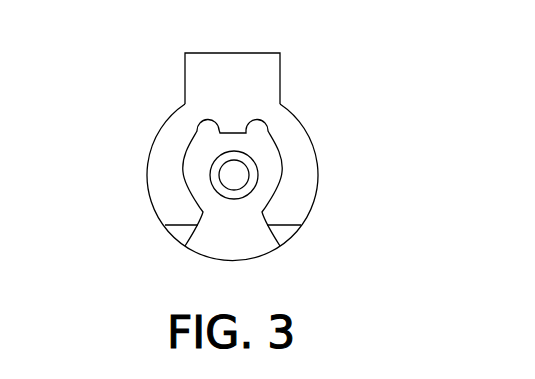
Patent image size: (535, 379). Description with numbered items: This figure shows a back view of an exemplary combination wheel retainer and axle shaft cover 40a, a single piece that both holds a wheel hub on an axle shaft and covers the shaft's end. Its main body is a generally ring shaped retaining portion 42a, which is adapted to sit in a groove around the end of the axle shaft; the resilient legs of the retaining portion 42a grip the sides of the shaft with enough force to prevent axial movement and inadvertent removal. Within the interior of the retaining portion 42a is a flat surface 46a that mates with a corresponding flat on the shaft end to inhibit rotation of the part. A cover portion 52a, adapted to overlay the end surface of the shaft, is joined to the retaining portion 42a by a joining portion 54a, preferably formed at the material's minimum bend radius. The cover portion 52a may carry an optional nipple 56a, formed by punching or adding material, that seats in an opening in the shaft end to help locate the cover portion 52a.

The combination wheel retainer and axle shaft cover 40a is at (327, 113).
The retaining portion 42a is at (293, 202).
The flat surface 46a is at (230, 149).
The cover portion 52a is at (235, 240).
The joining portion 54a is at (210, 53).
The nipple 56a is at (230, 174).